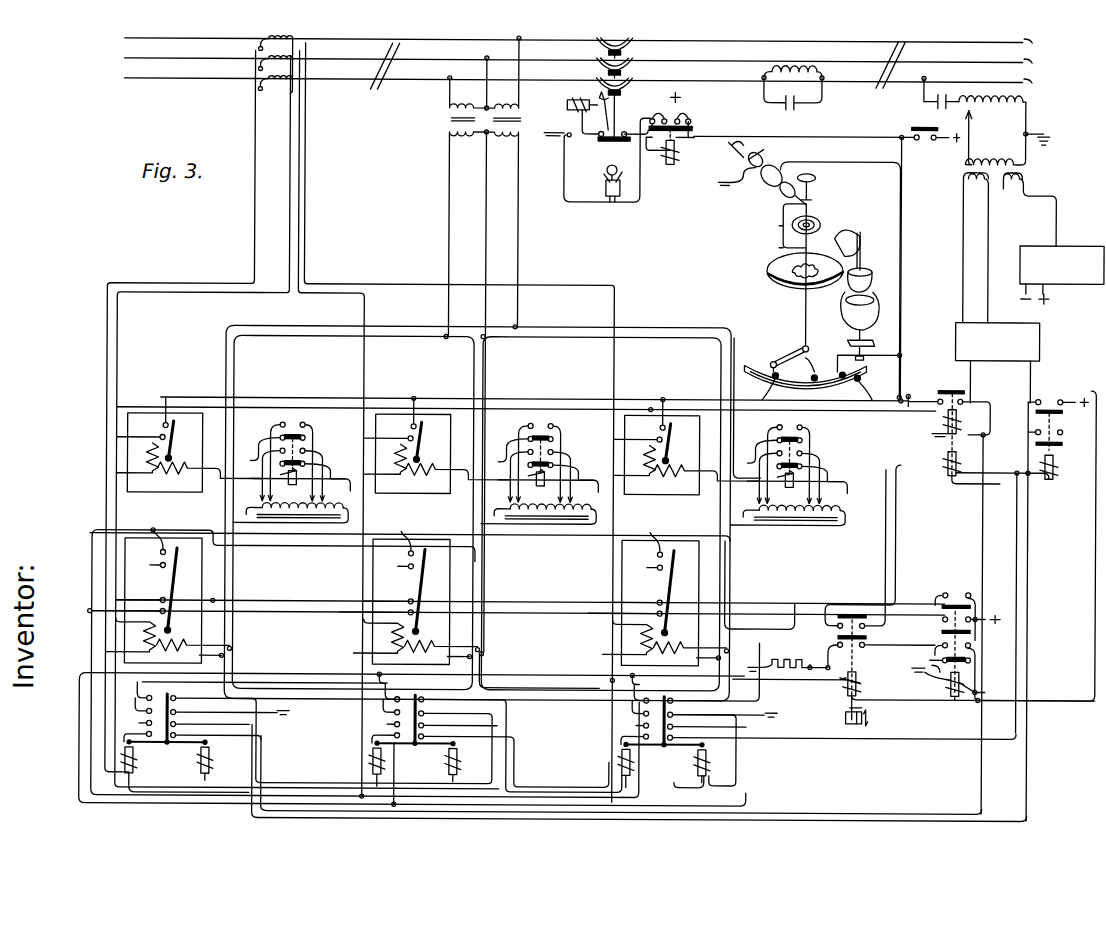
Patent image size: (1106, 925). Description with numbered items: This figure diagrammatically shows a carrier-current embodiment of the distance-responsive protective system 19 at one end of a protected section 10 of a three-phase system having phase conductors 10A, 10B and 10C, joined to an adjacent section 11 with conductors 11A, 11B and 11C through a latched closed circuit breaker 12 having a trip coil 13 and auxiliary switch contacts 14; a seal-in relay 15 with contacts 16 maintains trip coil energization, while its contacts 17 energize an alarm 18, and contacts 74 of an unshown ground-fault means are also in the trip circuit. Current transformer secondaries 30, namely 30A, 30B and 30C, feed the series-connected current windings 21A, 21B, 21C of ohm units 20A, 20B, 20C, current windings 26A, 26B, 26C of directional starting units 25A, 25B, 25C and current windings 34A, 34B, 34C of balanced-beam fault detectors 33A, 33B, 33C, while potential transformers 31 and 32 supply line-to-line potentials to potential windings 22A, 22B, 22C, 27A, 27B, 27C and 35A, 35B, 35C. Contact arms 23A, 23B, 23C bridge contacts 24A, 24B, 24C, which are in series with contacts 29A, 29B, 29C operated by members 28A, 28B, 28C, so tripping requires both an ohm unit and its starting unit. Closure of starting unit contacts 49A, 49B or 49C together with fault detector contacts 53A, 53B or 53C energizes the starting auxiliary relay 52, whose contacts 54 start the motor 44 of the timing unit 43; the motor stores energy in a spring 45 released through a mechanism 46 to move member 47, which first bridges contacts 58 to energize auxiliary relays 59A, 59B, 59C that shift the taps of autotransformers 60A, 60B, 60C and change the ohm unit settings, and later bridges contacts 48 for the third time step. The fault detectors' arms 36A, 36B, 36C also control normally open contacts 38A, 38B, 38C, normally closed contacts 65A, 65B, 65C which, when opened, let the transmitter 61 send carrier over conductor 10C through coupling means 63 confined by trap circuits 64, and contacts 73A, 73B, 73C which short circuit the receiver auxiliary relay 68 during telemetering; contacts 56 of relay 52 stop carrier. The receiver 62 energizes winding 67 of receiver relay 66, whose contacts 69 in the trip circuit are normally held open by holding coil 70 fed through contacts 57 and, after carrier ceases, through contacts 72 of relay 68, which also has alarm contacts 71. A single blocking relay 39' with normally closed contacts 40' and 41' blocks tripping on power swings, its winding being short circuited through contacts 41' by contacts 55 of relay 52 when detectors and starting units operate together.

The section of three-phase alternating-current system 10 is at (887, 75).
The phase conductor 10A is at (1043, 40).
The phase conductor 10B is at (1043, 62).
The phase conductor 10C is at (1043, 86).
The section of alternating-current system 11 is at (380, 76).
The phase conductor 11A is at (122, 38).
The phase conductor 11B is at (122, 58).
The phase conductor 11C is at (132, 78).
The circuit breaker 12 is at (600, 40).
The trip coil 13 is at (568, 96).
The auxiliary switch contacts 14 is at (618, 128).
The seal-in relay 15 is at (672, 152).
The seal-in relay contacts 16 is at (684, 116).
The normally open contacts 17 is at (648, 116).
The alarm 18 is at (600, 188).
The distance-responsive protective system 19 is at (550, 368).
The ohm unit 20A is at (660, 437).
The ohm unit 20B is at (411, 436).
The ohm unit 20C is at (152, 413).
The current winding 21A is at (634, 469).
The current winding 21B is at (385, 468).
The current winding 21C is at (150, 474).
The potential winding 22A is at (750, 469).
The potential winding 22B is at (501, 467).
The potential winding 22C is at (188, 457).
The movable contact arm 23A is at (680, 432).
The movable contact arm 23B is at (431, 430).
The movable contact arm 23C is at (183, 429).
The contacts 24A is at (638, 431).
The contacts 24B is at (389, 430).
The contacts 24C is at (141, 429).
The starting unit 25A is at (660, 589).
The starting unit 25B is at (411, 588).
The starting unit 25C is at (140, 538).
The current winding 26A is at (627, 643).
The current winding 26B is at (378, 642).
The current winding 26C is at (150, 650).
The potential winding 27A is at (690, 639).
The potential winding 27B is at (441, 637).
The potential winding 27C is at (182, 640).
The movable contact-controlling member 28A is at (681, 593).
The movable contact-controlling member 28B is at (432, 591).
The movable contact-controlling member 28C is at (178, 575).
The contacts 29A is at (644, 555).
The contacts 29B is at (395, 554).
The contacts 29C is at (158, 566).
The current transformer secondary windings 30 is at (290, 65).
The current transformer secondary winding 30A is at (256, 50).
The current transformer secondary winding 30B is at (256, 70).
The current transformer secondary winding 30C is at (256, 90).
The potential transformer 31 is at (440, 110).
The potential transformer 32 is at (518, 128).
The fault detector 33A is at (664, 734).
The fault detector 33B is at (415, 733).
The fault detector 33C is at (168, 746).
The current winding 34A is at (612, 767).
The current winding 34B is at (363, 766).
The current winding 34C is at (130, 775).
The potential winding 35A is at (722, 763).
The potential winding 35B is at (473, 761).
The potential winding 35C is at (212, 762).
The movable contact arm 36A is at (690, 718).
The movable contact arm 36B is at (441, 716).
The movable contact arm 36C is at (180, 714).
The normally open contacts 38A is at (630, 732).
The normally open contacts 38B is at (381, 731).
The normally open contacts 38C is at (146, 734).
The blocking relay 39' is at (914, 693).
The normally closed contacts 40' is at (850, 580).
The normally closed contacts 41' is at (872, 656).
The timing unit 43 is at (862, 192).
The electromagnetic motor unit 44 is at (763, 165).
The spring 45 is at (815, 222).
The mechanism 46 is at (780, 284).
The movable contact-controlling member 47 is at (766, 360).
The contacts 48 is at (840, 356).
The normally open contacts 49A is at (626, 600).
The normally open contacts 49B is at (377, 599).
The normally open contacts 49C is at (129, 598).
The starting auxiliary relay 52 is at (948, 683).
The normally open contacts 53A is at (629, 700).
The normally open contacts 53B is at (380, 699).
The normally open contacts 53C is at (142, 698).
The normally open contacts 54 is at (947, 590).
The normally open contacts 55 is at (940, 614).
The normally open contacts 56 is at (942, 642).
The normally closed contacts 57 is at (935, 660).
The contacts 58 is at (803, 366).
The auxiliary relay 59A is at (796, 464).
The auxiliary relay 59B is at (547, 462).
The auxiliary relay 59C is at (300, 478).
The variable tap autotransformer 60A is at (787, 507).
The variable tap autotransformer 60B is at (538, 506).
The variable tap autotransformer 60C is at (262, 505).
The transmitter 61 is at (1062, 243).
The receiver 62 is at (990, 322).
The coupling and tuning means 63 is at (1003, 137).
The trap circuit 64 is at (800, 105).
The normally closed contacts 65A is at (686, 688).
The normally closed contacts 65B is at (441, 703).
The normally closed contacts 65C is at (180, 700).
The carrier receiver relay 66 is at (934, 458).
The winding 67 is at (948, 474).
The carrier receiver auxiliary relay 68 is at (1056, 462).
The contacts 69 is at (936, 397).
The holding coil 70 is at (946, 420).
The contacts 71 is at (1062, 428).
The contacts 72 is at (1042, 397).
The normally closed contacts 73A is at (706, 734).
The normally closed contacts 73B is at (457, 733).
The normally closed contacts 73C is at (180, 736).
The contacts 74 is at (922, 143).